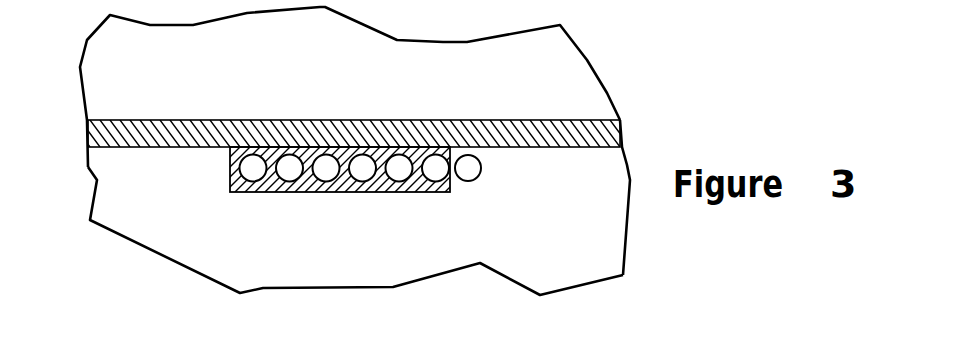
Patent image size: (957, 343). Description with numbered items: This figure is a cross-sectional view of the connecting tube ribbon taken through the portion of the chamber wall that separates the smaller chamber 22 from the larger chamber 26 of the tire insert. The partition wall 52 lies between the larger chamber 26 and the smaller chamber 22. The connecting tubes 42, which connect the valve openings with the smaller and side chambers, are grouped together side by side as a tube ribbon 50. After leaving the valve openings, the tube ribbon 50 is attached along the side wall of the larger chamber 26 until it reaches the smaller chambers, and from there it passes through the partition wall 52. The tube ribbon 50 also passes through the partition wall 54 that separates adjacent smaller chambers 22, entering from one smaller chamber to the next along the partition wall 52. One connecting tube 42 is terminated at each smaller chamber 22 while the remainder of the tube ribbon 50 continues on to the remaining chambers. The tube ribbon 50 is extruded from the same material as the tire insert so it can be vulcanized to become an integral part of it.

The larger chamber 26 is at (400, 84).
The smaller chamber 22 is at (392, 248).
The partition wall 52 is at (590, 118).
The tube ribbon 50 is at (230, 190).
The connecting tube 42 is at (478, 180).
The partition wall 54 is at (622, 273).